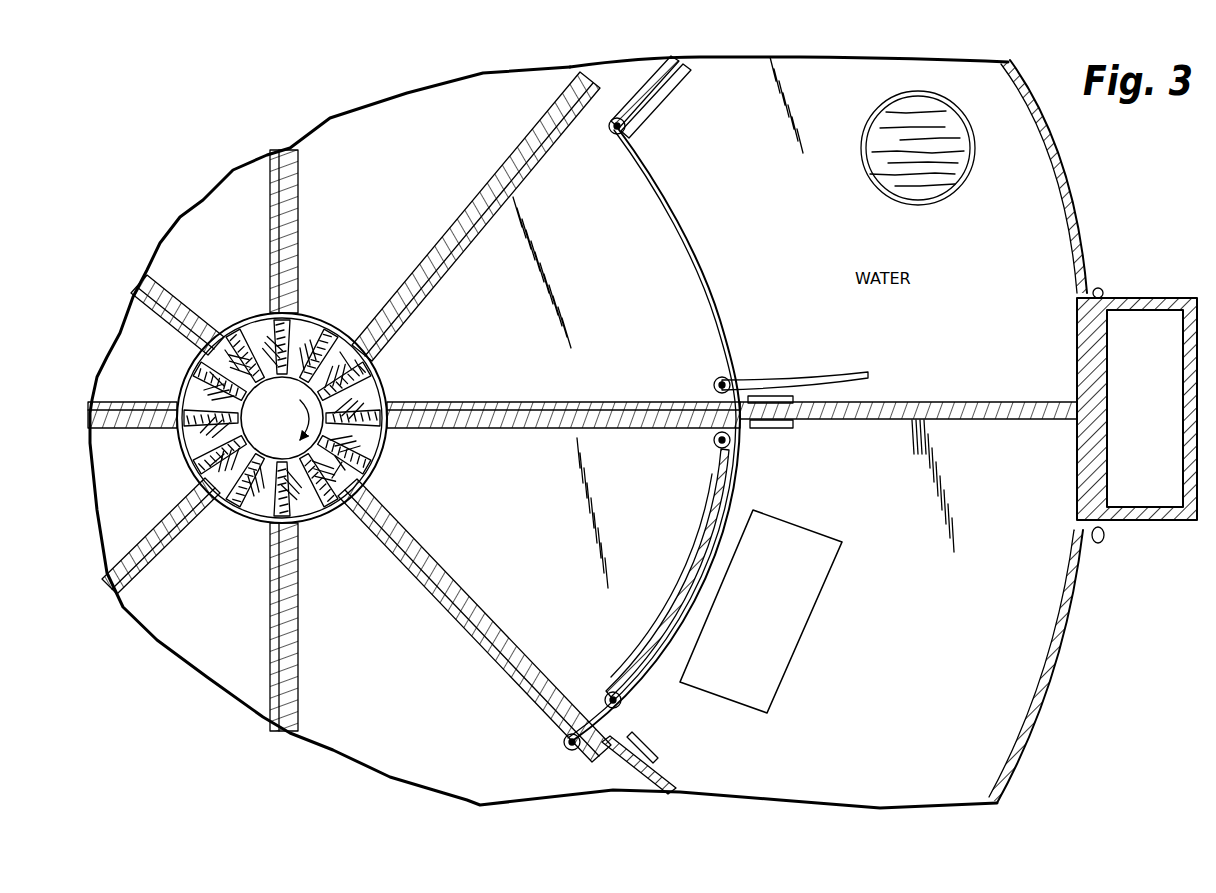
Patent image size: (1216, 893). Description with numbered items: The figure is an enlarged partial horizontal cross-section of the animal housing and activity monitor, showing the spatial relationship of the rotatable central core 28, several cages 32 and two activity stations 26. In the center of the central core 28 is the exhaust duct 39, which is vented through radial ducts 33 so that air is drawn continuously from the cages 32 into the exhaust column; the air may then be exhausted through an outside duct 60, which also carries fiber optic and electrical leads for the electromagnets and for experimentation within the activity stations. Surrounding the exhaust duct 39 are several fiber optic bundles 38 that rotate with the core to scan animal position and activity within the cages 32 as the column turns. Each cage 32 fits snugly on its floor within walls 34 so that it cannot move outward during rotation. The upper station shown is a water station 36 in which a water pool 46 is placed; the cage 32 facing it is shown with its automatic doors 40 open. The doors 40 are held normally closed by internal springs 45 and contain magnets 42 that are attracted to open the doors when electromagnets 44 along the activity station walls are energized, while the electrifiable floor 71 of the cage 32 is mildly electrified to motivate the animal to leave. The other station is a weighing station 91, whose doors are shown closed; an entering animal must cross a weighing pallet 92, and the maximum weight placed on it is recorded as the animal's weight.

The activity station 26 is at (838, 228).
The central core 28 is at (310, 404).
The cage 32 is at (347, 167).
The radial duct 33 is at (373, 400).
The wall 34 is at (607, 398).
The water station 36 is at (1085, 205).
The fiber optic bundle 38 is at (383, 452).
The exhaust duct 39 is at (333, 373).
The door 40 is at (660, 73).
The magnet 42 is at (645, 107).
The electromagnet 44 is at (655, 90).
The internal spring 45 is at (738, 376).
The water pool 46 is at (928, 203).
The duct 60 is at (1160, 330).
The electrifiable floor 71 is at (623, 303).
The weighing station 91 is at (968, 688).
The weighing pallet 92 is at (772, 616).